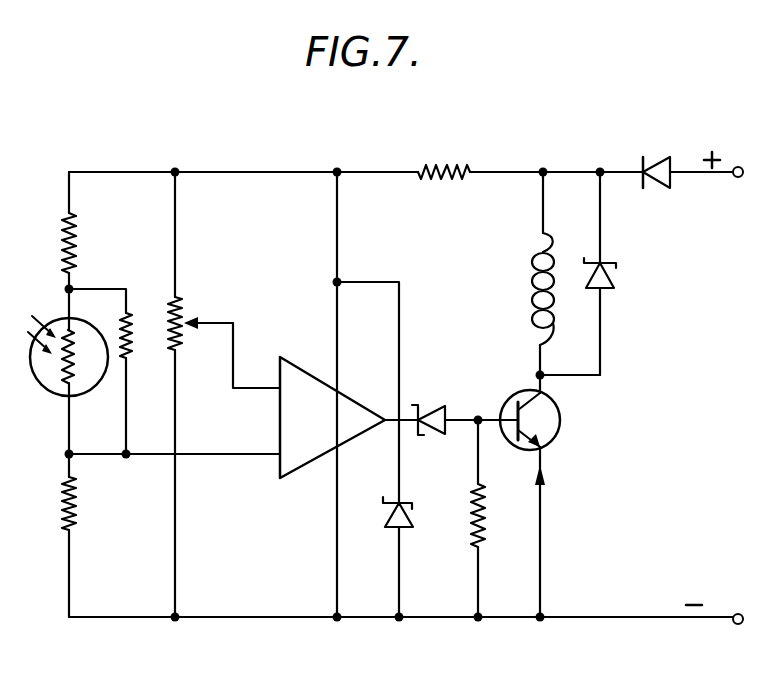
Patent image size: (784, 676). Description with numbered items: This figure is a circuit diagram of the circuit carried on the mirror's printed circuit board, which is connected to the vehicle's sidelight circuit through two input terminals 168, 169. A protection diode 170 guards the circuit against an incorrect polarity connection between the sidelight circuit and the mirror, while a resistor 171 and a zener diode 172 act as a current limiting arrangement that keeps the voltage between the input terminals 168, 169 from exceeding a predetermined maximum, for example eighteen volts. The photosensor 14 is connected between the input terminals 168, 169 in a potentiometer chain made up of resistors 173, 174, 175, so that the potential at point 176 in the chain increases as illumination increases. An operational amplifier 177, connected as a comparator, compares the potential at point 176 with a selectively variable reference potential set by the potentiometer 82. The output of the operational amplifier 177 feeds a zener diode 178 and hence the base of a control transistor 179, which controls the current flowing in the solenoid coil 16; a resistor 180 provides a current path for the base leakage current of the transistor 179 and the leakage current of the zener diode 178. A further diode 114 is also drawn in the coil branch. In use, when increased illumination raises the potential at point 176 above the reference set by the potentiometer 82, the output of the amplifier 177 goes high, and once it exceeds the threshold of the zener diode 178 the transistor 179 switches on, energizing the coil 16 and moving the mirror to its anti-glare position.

The photosensor 14 is at (58, 396).
The solenoid coil 16 is at (532, 288).
The potentiometer 82 is at (183, 305).
The zener diode 114 is at (610, 278).
The input terminal 168 is at (734, 180).
The input terminal 169 is at (734, 624).
The protection diode 170 is at (656, 158).
The resistor 171 is at (460, 148).
The zener diode 172 is at (413, 518).
The resistor 173 is at (80, 246).
The resistor 174 is at (133, 310).
The resistor 175 is at (76, 510).
The point in the chain 176 is at (72, 458).
The operational amplifier 177 is at (315, 450).
The zener diode 178 is at (428, 412).
The control transistor 179 is at (556, 438).
The resistor 180 is at (486, 524).